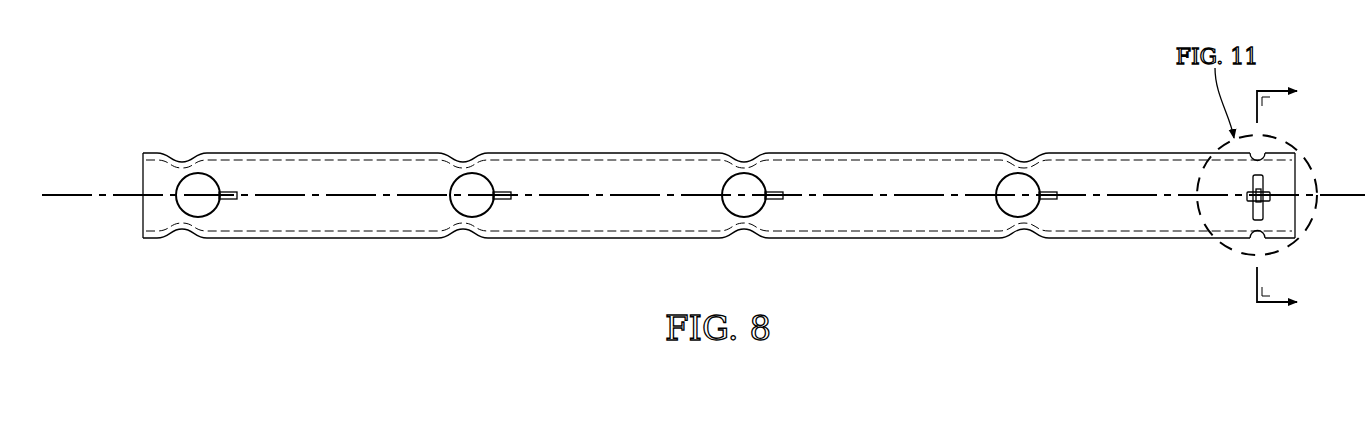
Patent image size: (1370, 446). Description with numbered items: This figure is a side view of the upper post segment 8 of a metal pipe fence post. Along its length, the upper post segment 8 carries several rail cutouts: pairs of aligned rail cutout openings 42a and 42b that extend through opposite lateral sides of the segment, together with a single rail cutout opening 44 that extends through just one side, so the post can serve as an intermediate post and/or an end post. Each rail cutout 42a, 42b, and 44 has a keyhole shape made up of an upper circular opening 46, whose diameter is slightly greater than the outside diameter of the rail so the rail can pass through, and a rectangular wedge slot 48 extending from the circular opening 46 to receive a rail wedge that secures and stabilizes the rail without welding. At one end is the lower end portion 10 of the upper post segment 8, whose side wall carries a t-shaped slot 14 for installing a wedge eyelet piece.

The upper post segment 8 is at (589, 126).
The lower end portion 10 is at (1232, 282).
The t-shaped slot 14 is at (1263, 186).
The rail cutout opening 42a is at (183, 240).
The rail cutout opening 42b is at (183, 151).
The single rail cutout opening 44 is at (171, 186).
The upper circular opening 46 is at (177, 203).
The rectangular wedge slot 48 is at (226, 192).